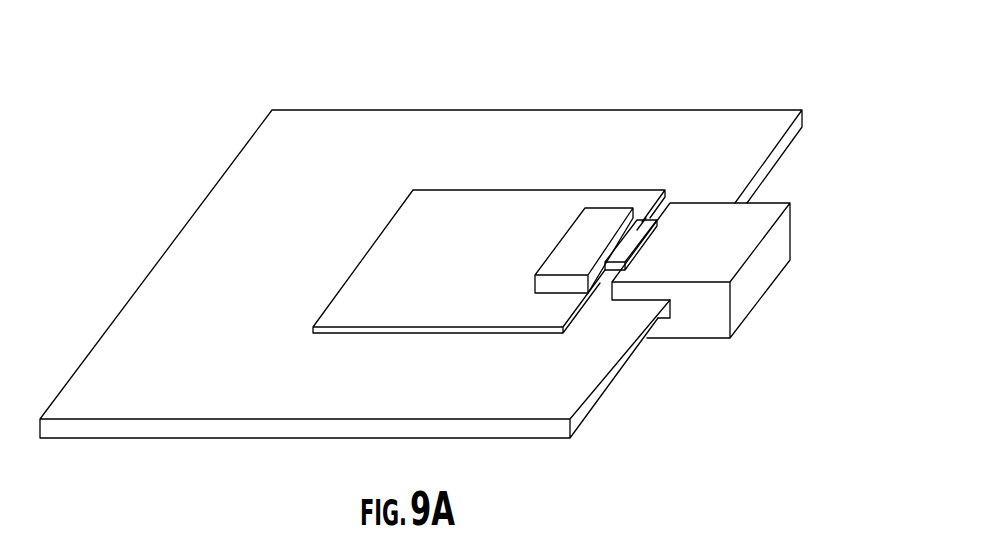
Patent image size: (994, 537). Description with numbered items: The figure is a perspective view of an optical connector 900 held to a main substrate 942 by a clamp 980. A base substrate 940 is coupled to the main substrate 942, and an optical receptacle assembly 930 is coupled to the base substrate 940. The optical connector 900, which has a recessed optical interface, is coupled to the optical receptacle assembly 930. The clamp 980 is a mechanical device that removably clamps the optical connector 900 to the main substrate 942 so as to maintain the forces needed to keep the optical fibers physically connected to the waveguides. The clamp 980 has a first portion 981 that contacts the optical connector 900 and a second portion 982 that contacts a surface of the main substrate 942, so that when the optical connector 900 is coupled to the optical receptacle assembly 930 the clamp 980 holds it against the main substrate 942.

The optical connector 900 is at (632, 242).
The optical receptacle assembly 930 is at (543, 258).
The base substrate 940 is at (487, 181).
The main substrate 942 is at (245, 205).
The clamp 980 is at (789, 232).
The first portion 981 is at (760, 217).
The second portion 982 is at (663, 323).